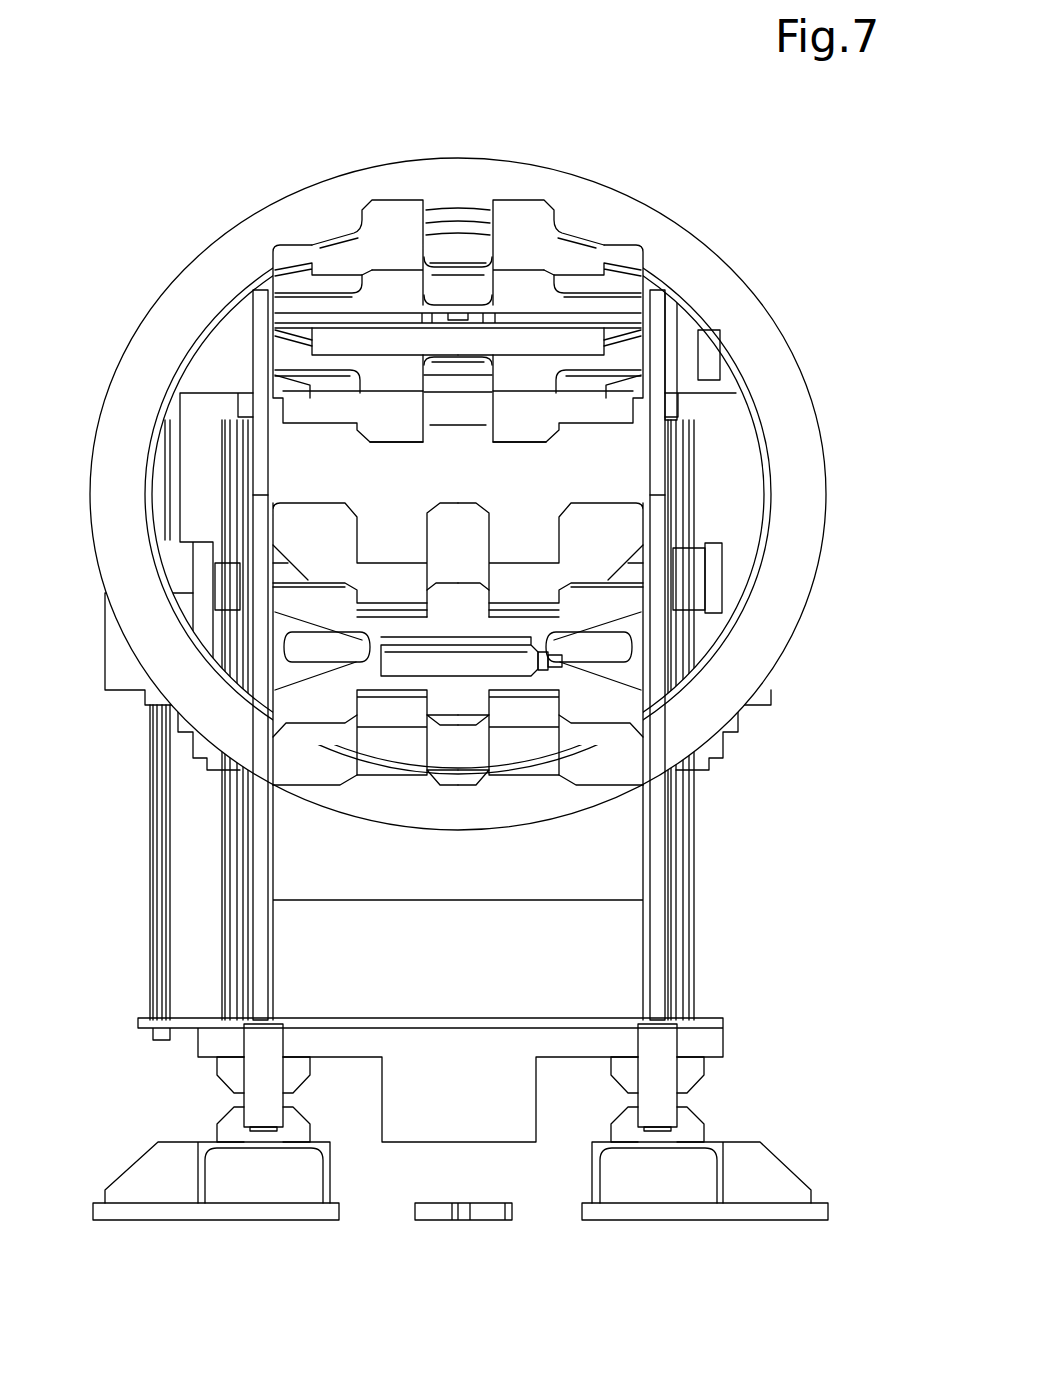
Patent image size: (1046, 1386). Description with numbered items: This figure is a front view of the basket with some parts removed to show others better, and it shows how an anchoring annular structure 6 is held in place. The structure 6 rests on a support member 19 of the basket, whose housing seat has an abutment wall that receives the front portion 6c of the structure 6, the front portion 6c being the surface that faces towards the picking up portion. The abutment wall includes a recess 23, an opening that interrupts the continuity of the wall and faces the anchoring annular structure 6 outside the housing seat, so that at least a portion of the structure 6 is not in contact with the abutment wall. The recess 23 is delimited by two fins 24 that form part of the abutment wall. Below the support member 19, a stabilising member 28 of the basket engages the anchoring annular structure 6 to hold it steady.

The anchoring annular structure 6 is at (730, 302).
The front portion 6c is at (470, 214).
The support member 19 is at (325, 230).
The recess 23 is at (455, 263).
The fins 24 is at (392, 228).
The stabilising member 28 is at (263, 538).